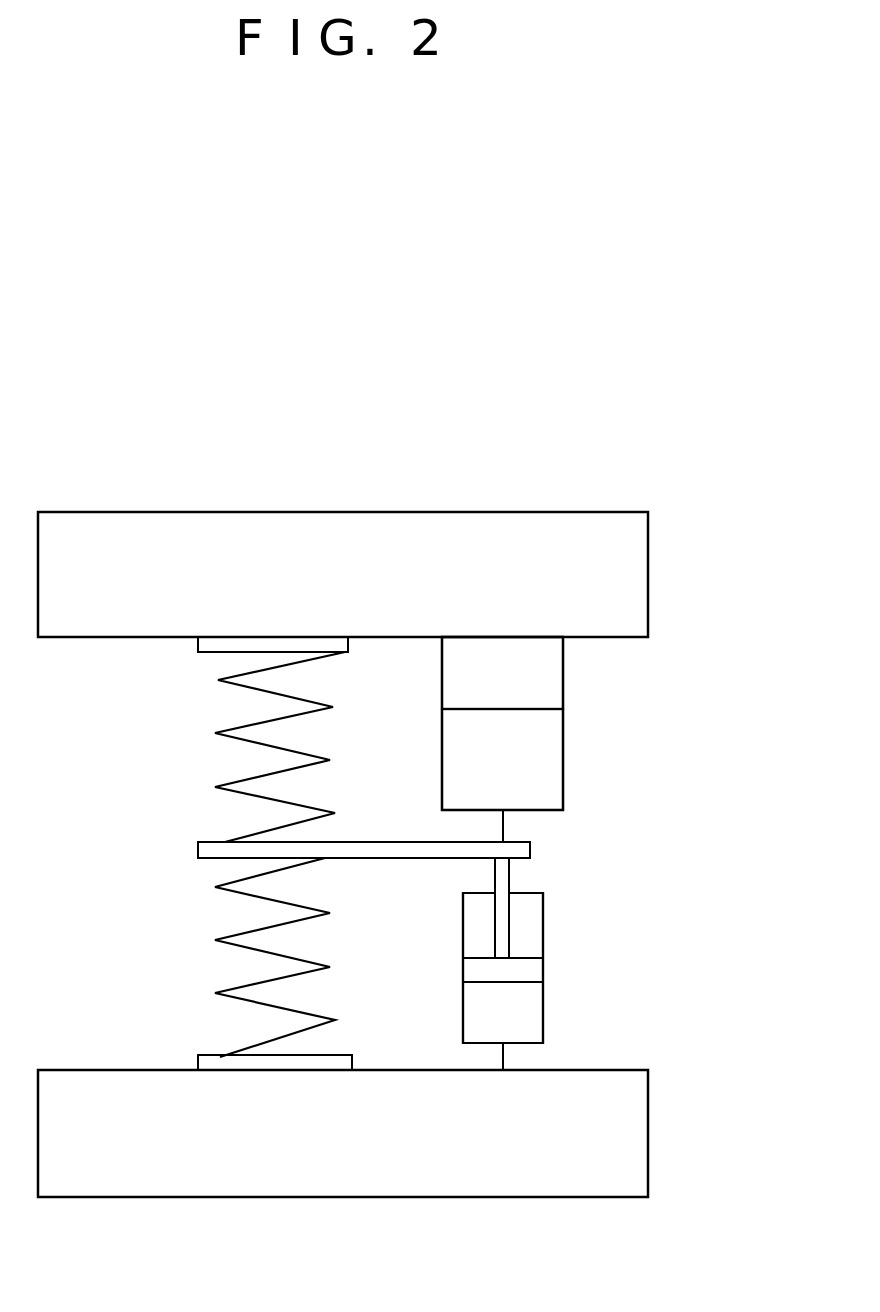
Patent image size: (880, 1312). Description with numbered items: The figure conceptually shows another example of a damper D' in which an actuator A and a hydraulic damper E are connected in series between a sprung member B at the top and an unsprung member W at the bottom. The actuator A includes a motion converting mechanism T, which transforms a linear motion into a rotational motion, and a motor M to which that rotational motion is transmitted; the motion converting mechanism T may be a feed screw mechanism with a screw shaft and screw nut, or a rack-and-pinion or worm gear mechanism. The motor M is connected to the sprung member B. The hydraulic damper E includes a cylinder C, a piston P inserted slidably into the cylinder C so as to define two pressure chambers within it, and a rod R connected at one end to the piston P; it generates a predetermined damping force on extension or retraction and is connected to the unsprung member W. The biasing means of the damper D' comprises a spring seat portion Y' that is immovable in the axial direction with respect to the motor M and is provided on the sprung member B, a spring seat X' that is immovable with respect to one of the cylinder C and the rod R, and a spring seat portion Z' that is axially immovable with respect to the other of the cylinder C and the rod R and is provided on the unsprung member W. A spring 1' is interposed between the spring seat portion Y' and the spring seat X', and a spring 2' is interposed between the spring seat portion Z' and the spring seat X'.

The sprung member B is at (628, 562).
The unsprung member W is at (643, 1100).
The spring seat portion Y' is at (230, 666).
The spring seat X' is at (322, 836).
The spring seat portion Z' is at (233, 1030).
The spring 1' is at (229, 747).
The spring 2' is at (224, 957).
The damper D' is at (611, 739).
The actuator A is at (565, 729).
The motor M is at (555, 683).
The motion converting mechanism T is at (563, 750).
The hydraulic damper E is at (550, 982).
The rod R is at (509, 880).
The piston P is at (543, 948).
The cylinder C is at (543, 1003).